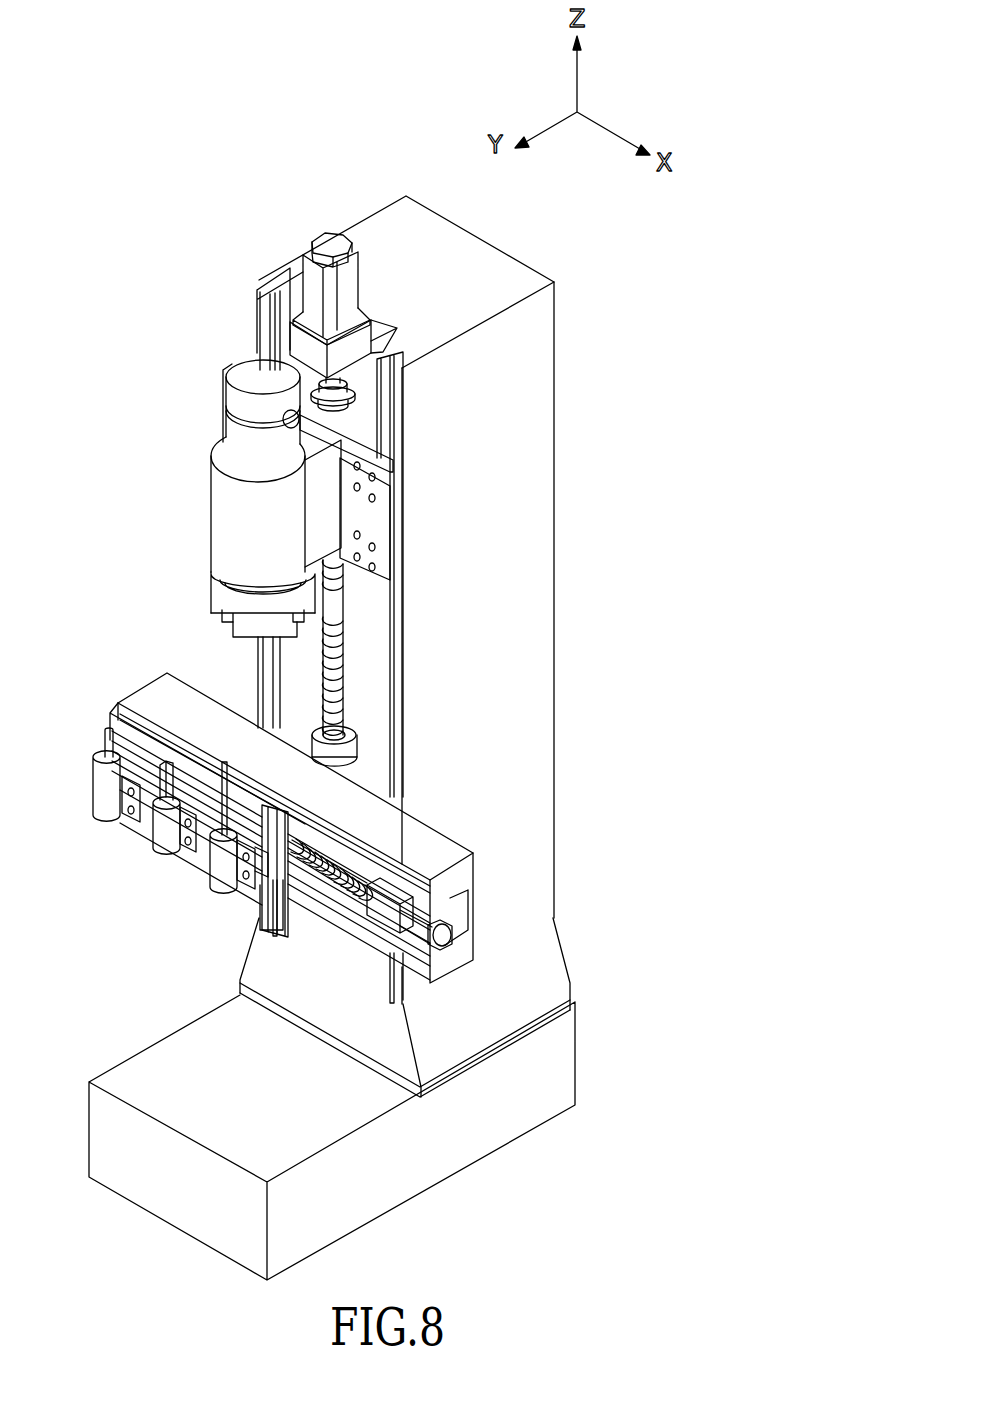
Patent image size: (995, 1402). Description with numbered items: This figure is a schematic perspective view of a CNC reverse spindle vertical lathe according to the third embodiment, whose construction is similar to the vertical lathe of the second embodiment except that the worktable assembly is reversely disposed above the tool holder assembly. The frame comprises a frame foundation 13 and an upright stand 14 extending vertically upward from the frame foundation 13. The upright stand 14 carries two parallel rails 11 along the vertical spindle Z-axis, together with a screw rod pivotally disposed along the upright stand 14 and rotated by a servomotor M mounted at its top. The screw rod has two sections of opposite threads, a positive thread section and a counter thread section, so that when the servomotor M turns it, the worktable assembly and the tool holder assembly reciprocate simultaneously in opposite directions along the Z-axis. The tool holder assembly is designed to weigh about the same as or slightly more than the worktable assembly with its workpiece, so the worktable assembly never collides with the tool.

The parallel rails 11 is at (381, 383).
The frame foundation 13 is at (493, 1133).
The upright stand 14 is at (552, 766).
The servomotor M is at (327, 243).